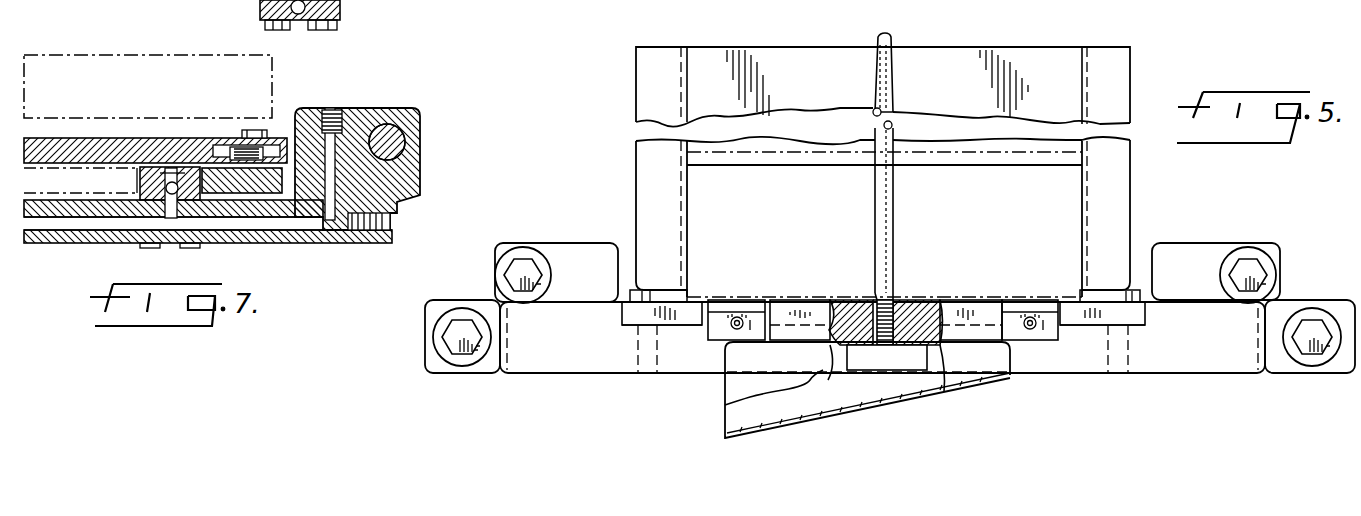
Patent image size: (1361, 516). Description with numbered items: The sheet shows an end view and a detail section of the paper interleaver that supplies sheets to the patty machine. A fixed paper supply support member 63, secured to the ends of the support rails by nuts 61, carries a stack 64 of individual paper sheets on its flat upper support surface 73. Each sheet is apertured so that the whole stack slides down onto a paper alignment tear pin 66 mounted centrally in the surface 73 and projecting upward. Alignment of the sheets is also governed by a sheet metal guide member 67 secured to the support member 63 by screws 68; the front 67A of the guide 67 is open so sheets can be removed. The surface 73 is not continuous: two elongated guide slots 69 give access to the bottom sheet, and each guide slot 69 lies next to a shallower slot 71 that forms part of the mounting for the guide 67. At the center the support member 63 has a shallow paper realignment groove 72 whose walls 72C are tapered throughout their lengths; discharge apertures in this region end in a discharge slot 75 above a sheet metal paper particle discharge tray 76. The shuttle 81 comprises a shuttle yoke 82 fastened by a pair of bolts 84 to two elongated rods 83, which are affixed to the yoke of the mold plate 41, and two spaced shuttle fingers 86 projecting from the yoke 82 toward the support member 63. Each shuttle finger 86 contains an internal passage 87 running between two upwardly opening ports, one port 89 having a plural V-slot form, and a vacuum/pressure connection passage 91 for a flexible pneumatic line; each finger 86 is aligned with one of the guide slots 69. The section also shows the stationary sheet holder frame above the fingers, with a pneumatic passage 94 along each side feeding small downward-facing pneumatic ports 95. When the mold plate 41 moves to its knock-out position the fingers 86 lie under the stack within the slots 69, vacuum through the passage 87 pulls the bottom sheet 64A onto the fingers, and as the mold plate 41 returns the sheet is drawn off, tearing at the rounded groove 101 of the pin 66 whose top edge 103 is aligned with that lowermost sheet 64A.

In FIG. 7, the mold plate 41 is at (133, 46).
In FIG. 5, the nuts 61 is at (452, 341).
In FIG. 5, the paper supply support member 63 is at (548, 364).
In FIG. 5, the stack of paper sheets 64 is at (806, 150).
In FIG. 5, the bottom sheet 64A is at (986, 298).
In FIG. 5, the paper alignment tear pin 66 is at (896, 109).
In FIG. 5, the sheet metal guide member 67 is at (1007, 46).
In FIG. 5, the front of guide 67A is at (1035, 168).
In FIG. 5, the screws 68 is at (633, 296).
In FIG. 5, the guide slots 69 is at (720, 343).
In FIG. 5, the shallow slot 71 is at (650, 323).
In FIG. 5, the paper realignment groove 72 is at (898, 295).
In FIG. 5, the walls of groove 72C is at (873, 300).
In FIG. 5, the upper support surface 73 is at (802, 298).
In FIG. 5, the discharge slot 75 is at (863, 364).
In FIG. 5, the paper particle discharge tray 76 is at (740, 429).
In FIG. 7, the shuttle 81 is at (262, 4).
In FIG. 7, the shuttle yoke 82 is at (400, 180).
In FIG. 5, the shuttle yoke 82 is at (588, 231).
In FIG. 7, the elongated rods 83 is at (415, 131).
In FIG. 5, the bolts 84 is at (508, 271).
In FIG. 7, the shuttle fingers 86 is at (140, 194).
In FIG. 5, the shuttle fingers 86 is at (737, 298).
In FIG. 7, the internal passage 87 is at (180, 194).
In FIG. 7, the port 89 is at (165, 166).
In FIG. 7, the vacuum/pressure connection passage 91 is at (342, 5).
In FIG. 7, the pneumatic passage 94 is at (268, 140).
In FIG. 7, the pneumatic ports 95 is at (212, 157).
In FIG. 5, the groove in pin 101 is at (877, 298).
In FIG. 5, the top edge of groove 103 is at (894, 292).